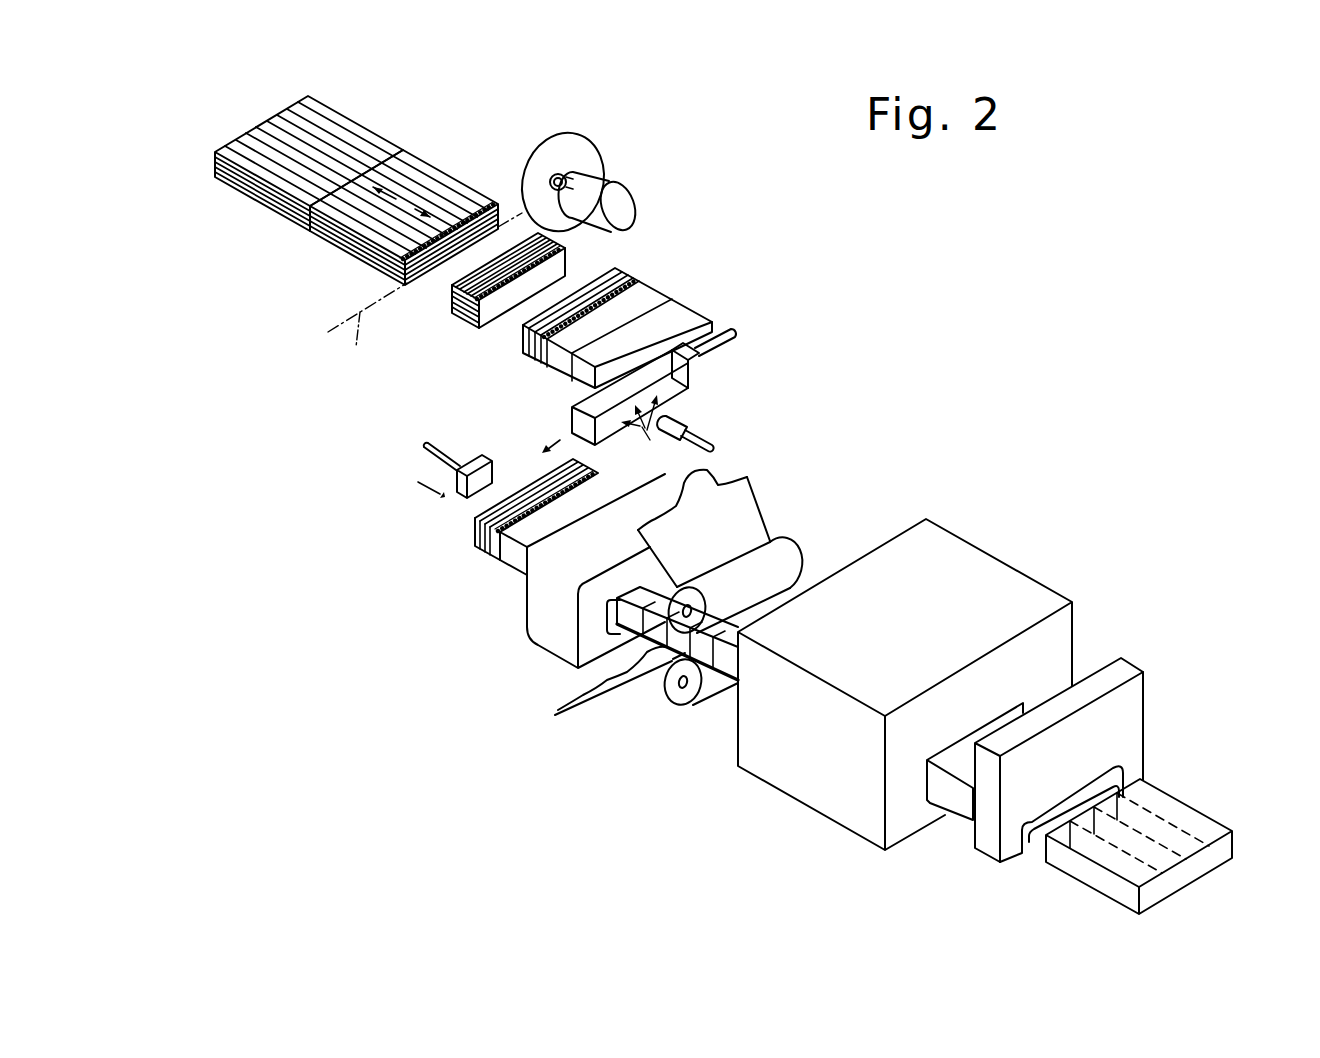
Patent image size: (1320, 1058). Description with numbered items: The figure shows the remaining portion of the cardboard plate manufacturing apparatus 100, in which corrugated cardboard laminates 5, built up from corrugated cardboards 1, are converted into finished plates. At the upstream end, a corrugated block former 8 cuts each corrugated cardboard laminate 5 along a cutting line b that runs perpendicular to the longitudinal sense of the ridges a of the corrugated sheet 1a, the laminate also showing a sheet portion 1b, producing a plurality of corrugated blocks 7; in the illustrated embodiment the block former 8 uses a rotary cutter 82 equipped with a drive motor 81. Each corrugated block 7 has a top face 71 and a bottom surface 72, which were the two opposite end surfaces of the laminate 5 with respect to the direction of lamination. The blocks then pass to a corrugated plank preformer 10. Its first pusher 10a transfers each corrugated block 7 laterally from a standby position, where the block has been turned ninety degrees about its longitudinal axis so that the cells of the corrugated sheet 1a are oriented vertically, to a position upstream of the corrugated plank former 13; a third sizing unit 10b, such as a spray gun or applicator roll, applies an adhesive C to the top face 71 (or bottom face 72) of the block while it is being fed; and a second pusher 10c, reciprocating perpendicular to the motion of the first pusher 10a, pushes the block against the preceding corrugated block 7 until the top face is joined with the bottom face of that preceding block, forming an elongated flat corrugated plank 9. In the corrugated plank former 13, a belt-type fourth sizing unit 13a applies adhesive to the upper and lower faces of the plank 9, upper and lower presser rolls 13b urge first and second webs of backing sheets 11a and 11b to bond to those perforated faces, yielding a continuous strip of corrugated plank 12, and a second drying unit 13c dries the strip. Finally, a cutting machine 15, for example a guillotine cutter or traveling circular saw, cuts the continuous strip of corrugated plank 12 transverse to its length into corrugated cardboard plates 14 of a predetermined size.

The corrugated cardboard 1 is at (413, 155).
The corrugated sheet 1a is at (478, 212).
The cutting line 1b is at (503, 222).
The corrugated cardboard laminate 5 is at (343, 250).
The corrugated block 7 is at (553, 415).
The top face 71 is at (458, 289).
The bottom surface 72 is at (476, 318).
The corrugated block former 8 is at (605, 162).
The drive motor 81 is at (612, 186).
The rotary cutter 82 is at (566, 131).
The elongated flat corrugated plank 9 is at (517, 563).
The corrugated plank preformer 10 is at (605, 441).
The first pusher 10a is at (690, 378).
The third sizing unit 10b is at (690, 428).
The second pusher 10c is at (458, 492).
The first web of backing sheet 11a is at (743, 500).
The second web of backing sheet 11b is at (612, 692).
The continuous strip of corrugated plank 12 is at (790, 590).
The corrugated plank former 13 is at (767, 685).
The fourth sizing unit 13a is at (537, 617).
The presser roll 13b is at (777, 547).
The second drying unit 13c is at (966, 560).
The corrugated cardboard plate 14 is at (1167, 807).
The cutting machine 15 is at (1135, 732).
The cardboard plate manufacturing apparatus 100 is at (797, 305).
The ridge a is at (401, 195).
The cutting line b is at (362, 347).
The adhesive C is at (644, 434).